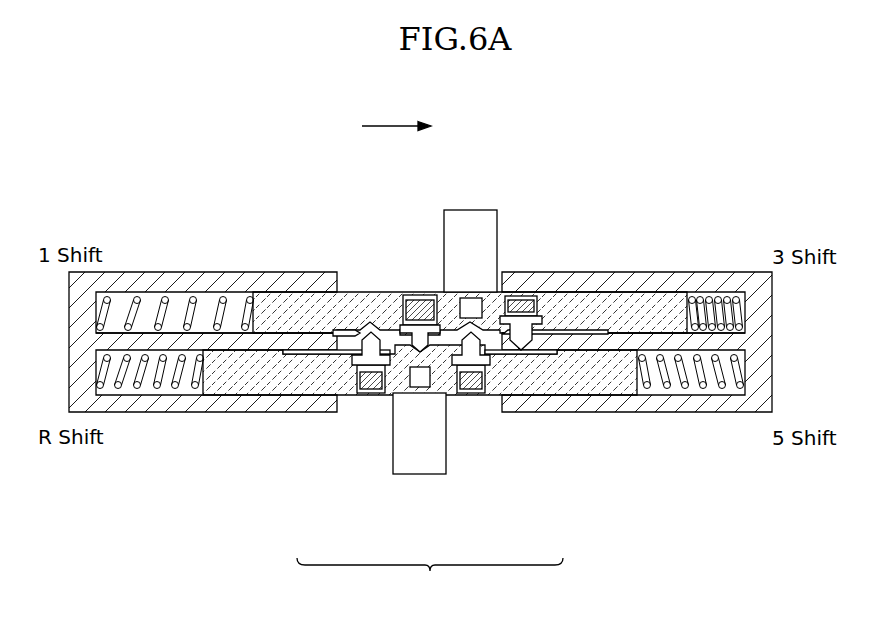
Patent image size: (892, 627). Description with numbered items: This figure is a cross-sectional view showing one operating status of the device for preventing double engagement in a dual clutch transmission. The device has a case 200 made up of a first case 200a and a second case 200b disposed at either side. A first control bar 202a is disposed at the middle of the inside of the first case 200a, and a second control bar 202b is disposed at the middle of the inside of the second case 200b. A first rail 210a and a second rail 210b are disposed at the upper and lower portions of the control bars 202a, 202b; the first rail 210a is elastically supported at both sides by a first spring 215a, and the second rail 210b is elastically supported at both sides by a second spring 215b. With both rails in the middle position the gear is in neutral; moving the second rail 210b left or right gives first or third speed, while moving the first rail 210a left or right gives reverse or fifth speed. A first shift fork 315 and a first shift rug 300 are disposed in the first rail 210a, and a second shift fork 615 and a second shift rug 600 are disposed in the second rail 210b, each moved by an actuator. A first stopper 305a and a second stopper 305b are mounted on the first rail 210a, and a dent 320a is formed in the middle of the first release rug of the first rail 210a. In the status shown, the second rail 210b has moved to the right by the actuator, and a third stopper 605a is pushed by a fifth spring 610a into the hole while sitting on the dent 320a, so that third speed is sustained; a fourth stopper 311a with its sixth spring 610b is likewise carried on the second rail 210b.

The case 200 is at (430, 577).
The first case 200a is at (211, 392).
The second case 200b is at (637, 373).
The first control bar 202a is at (208, 342).
The second control bar 202b is at (622, 340).
The first rail 210a is at (237, 376).
The second rail 210b is at (660, 300).
The first spring 215a is at (703, 380).
The second spring 215b is at (730, 312).
The first shift rug 300 is at (437, 365).
The first stopper 305a is at (355, 331).
The second stopper 305b is at (556, 356).
The fourth stopper 311a is at (548, 325).
The first shift fork 315 is at (410, 466).
The dent 320a is at (423, 352).
The second shift rug 600 is at (471, 300).
The third stopper 605a is at (366, 350).
The fifth spring 610a is at (415, 300).
The sixth spring 610b is at (520, 305).
The second shift fork 615 is at (472, 220).